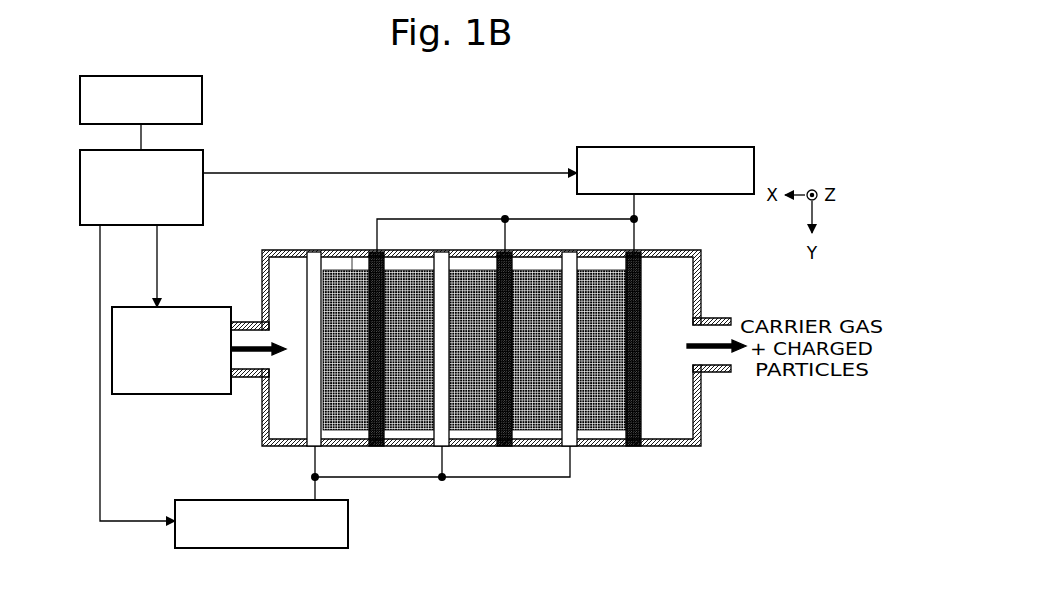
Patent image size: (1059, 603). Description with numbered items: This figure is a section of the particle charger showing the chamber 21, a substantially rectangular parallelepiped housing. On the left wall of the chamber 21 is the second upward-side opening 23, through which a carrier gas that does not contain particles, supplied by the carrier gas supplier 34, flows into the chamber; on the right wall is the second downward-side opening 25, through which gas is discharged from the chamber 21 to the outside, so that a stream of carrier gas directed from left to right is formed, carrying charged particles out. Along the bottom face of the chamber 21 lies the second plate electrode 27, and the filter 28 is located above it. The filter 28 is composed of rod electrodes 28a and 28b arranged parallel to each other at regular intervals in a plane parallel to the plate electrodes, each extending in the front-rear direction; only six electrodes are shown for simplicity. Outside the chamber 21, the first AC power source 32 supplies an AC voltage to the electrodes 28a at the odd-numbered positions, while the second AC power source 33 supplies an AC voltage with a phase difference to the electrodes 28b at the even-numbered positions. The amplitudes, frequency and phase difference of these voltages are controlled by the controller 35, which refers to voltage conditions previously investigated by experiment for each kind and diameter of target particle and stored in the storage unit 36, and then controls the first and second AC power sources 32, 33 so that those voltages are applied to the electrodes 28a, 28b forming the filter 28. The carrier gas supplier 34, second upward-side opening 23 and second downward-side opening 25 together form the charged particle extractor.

The chamber 21 is at (702, 272).
The second upward-side opening 23 is at (240, 378).
The second downward-side opening 25 is at (716, 373).
The second plate electrode 27 is at (352, 262).
The filter 28 is at (527, 409).
The rod electrode 28a is at (337, 446).
The rod electrode 28b is at (405, 446).
The first AC power source 32 is at (279, 549).
The second AC power source 33 is at (676, 147).
The carrier gas supplier 34 is at (172, 395).
The controller 35 is at (203, 198).
The storage unit 36 is at (203, 96).